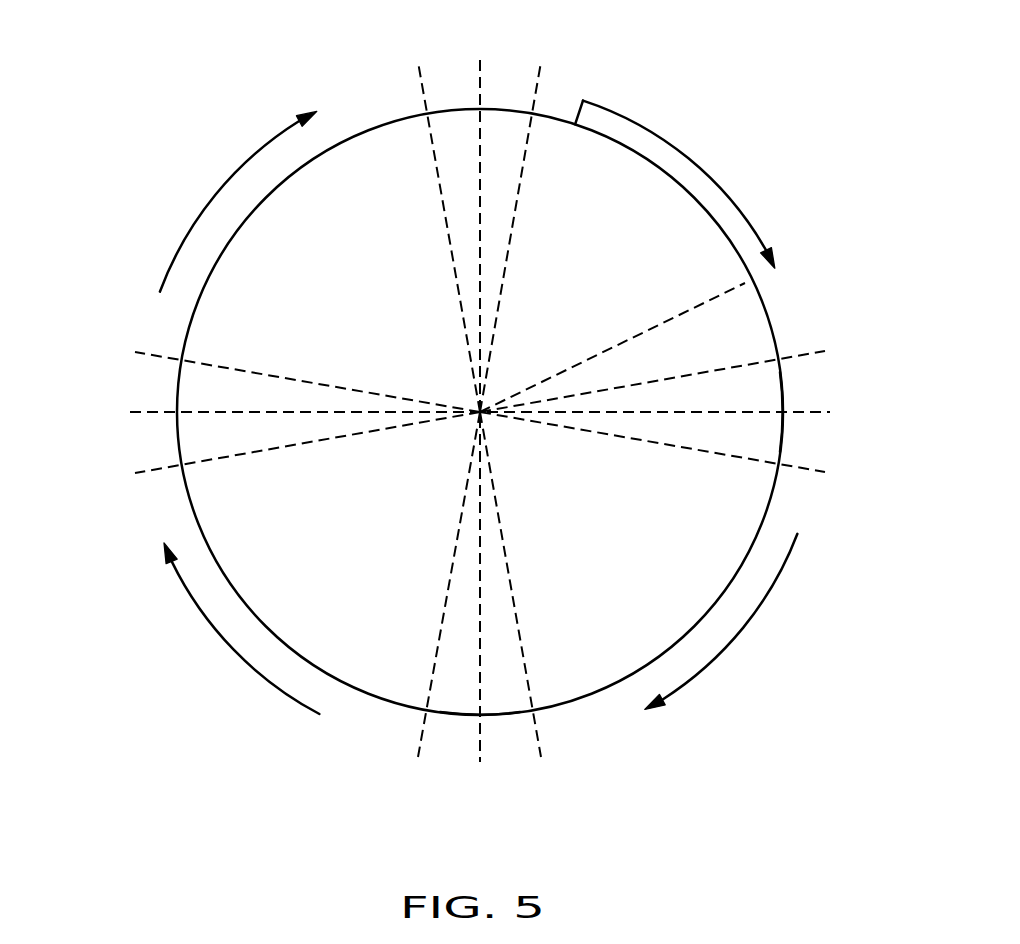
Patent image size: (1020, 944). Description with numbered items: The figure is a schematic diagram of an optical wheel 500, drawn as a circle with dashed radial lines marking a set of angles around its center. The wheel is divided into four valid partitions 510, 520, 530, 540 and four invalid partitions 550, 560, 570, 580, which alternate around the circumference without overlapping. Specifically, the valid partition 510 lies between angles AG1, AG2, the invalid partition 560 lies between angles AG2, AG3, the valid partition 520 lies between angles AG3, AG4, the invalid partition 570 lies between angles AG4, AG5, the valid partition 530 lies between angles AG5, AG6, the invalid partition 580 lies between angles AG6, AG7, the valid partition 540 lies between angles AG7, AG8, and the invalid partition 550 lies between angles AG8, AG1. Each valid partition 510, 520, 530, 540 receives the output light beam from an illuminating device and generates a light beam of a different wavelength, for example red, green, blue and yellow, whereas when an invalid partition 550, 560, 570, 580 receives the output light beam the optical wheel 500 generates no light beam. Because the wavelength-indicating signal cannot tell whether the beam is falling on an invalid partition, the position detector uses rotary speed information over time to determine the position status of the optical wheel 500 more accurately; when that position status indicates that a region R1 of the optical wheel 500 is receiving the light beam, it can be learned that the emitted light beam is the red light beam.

The optical wheel 500 is at (818, 805).
The valid partition 510 is at (758, 318).
The valid partition 520 is at (709, 577).
The valid partition 530 is at (299, 622).
The valid partition 540 is at (267, 233).
The invalid partition 550 is at (505, 118).
The invalid partition 560 is at (770, 388).
The invalid partition 570 is at (505, 712).
The invalid partition 580 is at (188, 387).
The region R1 is at (697, 153).
The angle AG1 is at (540, 90).
The angle AG2 is at (800, 356).
The angle AG3 is at (800, 473).
The angle AG4 is at (543, 733).
The angle AG5 is at (415, 730).
The angle AG6 is at (167, 467).
The angle AG7 is at (168, 355).
The angle AG8 is at (425, 93).